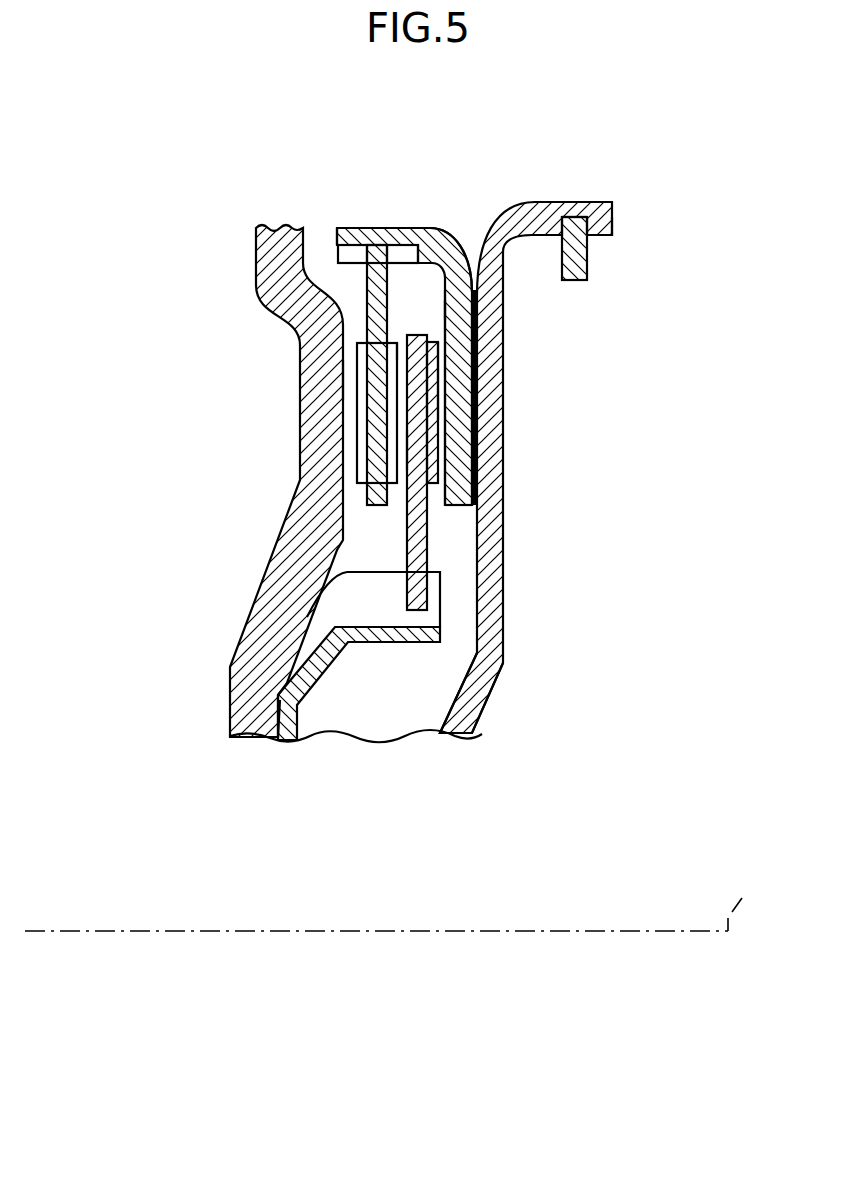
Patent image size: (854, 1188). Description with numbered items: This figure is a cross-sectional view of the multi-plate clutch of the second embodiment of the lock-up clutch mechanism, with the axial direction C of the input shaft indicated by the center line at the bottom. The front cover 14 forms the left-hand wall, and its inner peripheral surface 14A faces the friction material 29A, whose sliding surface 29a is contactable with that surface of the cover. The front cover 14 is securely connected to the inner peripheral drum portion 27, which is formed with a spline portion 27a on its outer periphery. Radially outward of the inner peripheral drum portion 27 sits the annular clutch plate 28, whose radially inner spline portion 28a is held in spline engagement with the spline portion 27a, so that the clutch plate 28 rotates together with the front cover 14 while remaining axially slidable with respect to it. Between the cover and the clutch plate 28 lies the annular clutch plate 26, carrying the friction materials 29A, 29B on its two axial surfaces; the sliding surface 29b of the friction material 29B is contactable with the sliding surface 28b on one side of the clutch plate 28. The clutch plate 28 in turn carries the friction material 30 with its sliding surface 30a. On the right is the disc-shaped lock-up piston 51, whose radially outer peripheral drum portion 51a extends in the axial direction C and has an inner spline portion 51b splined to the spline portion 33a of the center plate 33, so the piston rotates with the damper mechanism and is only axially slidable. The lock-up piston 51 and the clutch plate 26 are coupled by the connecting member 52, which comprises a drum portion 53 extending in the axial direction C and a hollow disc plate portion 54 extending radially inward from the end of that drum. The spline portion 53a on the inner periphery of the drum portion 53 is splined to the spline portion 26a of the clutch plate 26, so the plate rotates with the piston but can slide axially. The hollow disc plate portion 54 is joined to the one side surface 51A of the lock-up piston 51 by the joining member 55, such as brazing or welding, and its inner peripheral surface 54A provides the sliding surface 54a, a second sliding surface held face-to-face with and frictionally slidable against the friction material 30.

The front cover 14 is at (245, 623).
The inner peripheral surface 14A is at (343, 380).
The clutch plate 26 is at (367, 310).
The spline portion 26a is at (383, 256).
The inner peripheral drum portion 27 is at (370, 643).
The spline portion 27a is at (347, 603).
The clutch plate 28 is at (414, 520).
The spline portion 28a is at (427, 597).
The sliding surface 28b is at (405, 445).
The friction material 29A is at (357, 410).
The sliding surface 29a is at (367, 468).
The friction material 29B is at (438, 363).
The sliding surface 29b is at (402, 345).
The friction material 30 is at (440, 470).
The sliding surface 30a is at (440, 391).
The center plate 33 is at (580, 258).
The spline portion 33a is at (563, 216).
The lock-up piston 51 is at (508, 569).
The one side surface 51A is at (490, 650).
The outer peripheral drum portion 51a is at (575, 204).
The spline portion 51b is at (612, 226).
The connecting member 52 is at (453, 232).
The drum portion 53 is at (367, 232).
The spline portion 53a is at (343, 243).
The hollow disc plate portion 54 is at (463, 418).
The inner peripheral surface 54A is at (448, 307).
The sliding surface 54a is at (447, 490).
The joining member 55 is at (478, 378).
The axial direction C is at (390, 897).